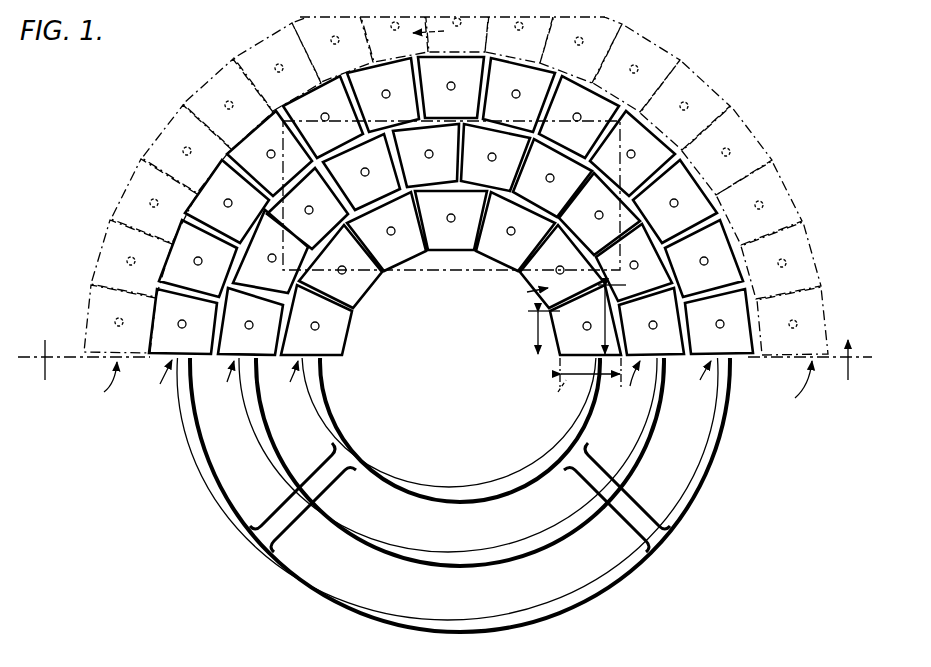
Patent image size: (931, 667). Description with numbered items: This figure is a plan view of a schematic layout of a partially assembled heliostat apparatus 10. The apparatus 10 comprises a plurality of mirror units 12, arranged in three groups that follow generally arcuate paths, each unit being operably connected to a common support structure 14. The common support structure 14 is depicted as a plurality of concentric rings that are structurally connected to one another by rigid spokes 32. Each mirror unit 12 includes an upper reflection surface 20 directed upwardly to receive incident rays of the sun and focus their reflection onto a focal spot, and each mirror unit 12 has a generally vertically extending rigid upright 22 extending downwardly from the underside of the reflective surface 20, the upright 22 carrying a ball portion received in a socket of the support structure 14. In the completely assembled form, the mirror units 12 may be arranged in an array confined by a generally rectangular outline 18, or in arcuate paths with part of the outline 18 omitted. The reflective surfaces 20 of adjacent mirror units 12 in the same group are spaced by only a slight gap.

The heliostat apparatus 10 is at (182, 512).
The mirror unit 12 is at (148, 130).
The common support structure 14 is at (444, 622).
The generally rectangular outline 18 is at (466, 273).
The upper reflection surface 20 is at (98, 303).
The rigid upright 22 is at (300, 210).
The rigid spokes 32 is at (625, 512).